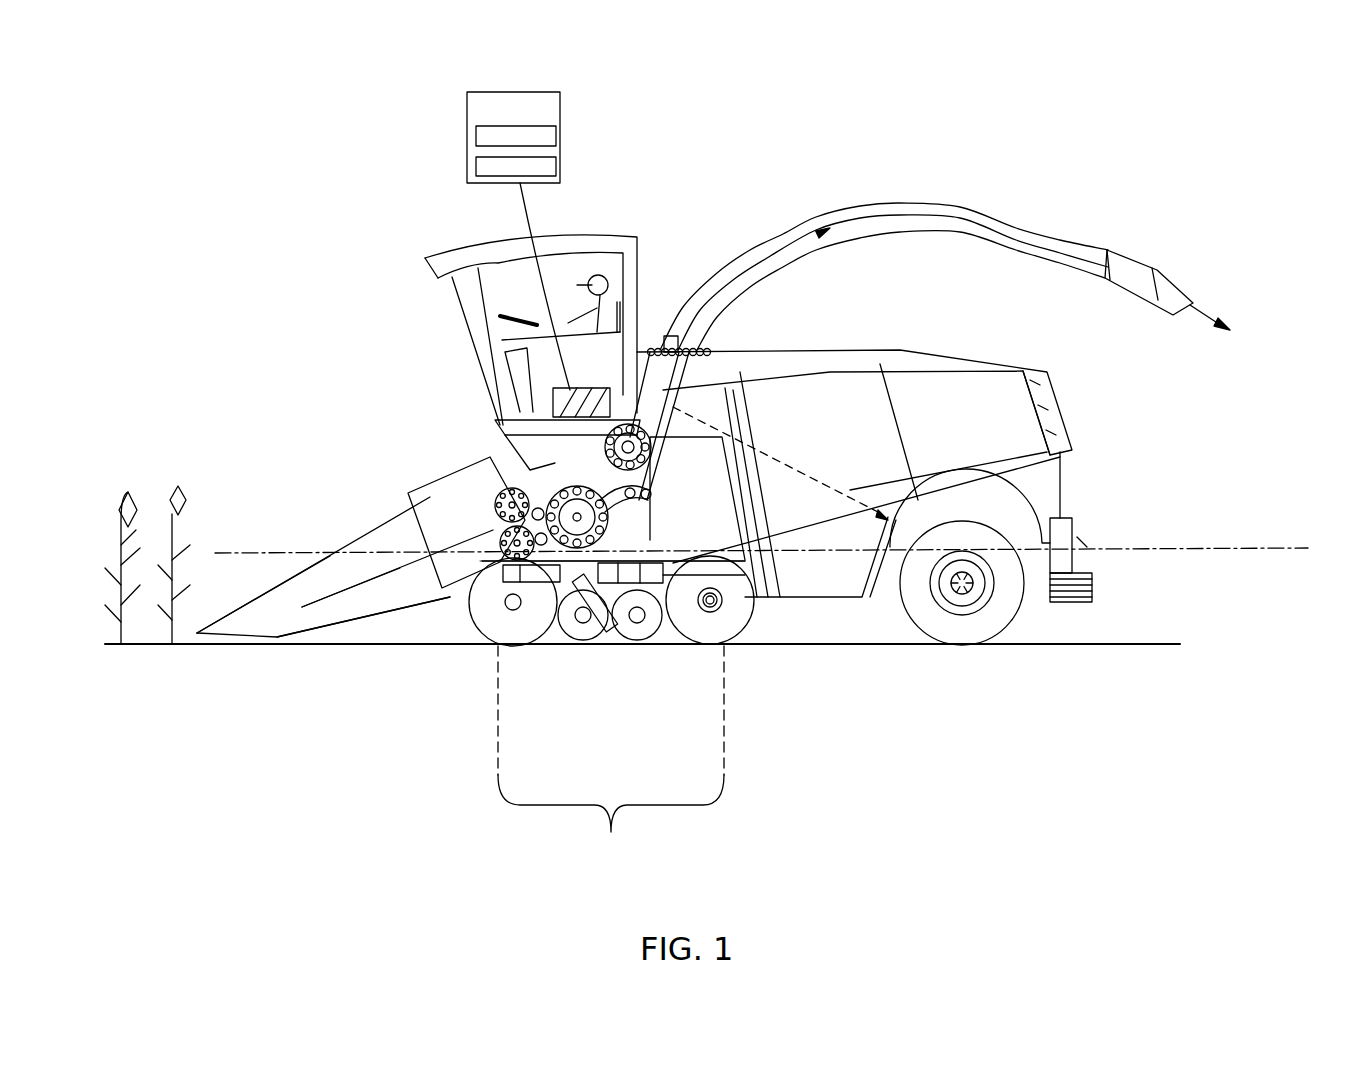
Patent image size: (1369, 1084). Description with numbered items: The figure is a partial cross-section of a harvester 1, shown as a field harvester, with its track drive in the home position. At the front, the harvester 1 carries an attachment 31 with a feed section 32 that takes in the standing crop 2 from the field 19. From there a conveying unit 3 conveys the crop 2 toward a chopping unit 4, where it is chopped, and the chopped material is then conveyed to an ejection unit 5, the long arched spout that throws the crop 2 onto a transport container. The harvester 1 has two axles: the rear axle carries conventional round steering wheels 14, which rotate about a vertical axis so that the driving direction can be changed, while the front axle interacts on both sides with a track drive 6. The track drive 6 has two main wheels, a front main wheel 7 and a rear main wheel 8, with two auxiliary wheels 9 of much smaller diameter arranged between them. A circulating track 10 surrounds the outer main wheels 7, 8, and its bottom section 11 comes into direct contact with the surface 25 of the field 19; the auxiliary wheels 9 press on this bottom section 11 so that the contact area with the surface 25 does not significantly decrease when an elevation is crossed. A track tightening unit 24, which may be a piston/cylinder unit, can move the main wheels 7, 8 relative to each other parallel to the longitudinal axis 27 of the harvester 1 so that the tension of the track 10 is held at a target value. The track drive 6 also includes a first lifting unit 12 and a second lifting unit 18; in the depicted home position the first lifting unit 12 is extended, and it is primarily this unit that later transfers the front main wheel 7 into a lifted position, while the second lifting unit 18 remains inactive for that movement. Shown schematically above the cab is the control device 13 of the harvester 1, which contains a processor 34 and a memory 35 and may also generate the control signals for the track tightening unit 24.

The harvester 1 is at (336, 270).
The crop 2 is at (128, 492).
The conveying unit 3 is at (493, 497).
The chopping unit 4 is at (543, 493).
The ejection unit 5 is at (793, 215).
The track drive 6 is at (653, 647).
The front main wheel 7 is at (513, 646).
The rear main wheel 8 is at (737, 648).
The auxiliary wheels 9 is at (587, 646).
The track 10 is at (683, 562).
The bottom section 11 is at (611, 764).
The first lifting unit 12 is at (667, 592).
The control device 13 is at (543, 92).
The steering wheels 14 is at (1005, 617).
The second lifting unit 18 is at (737, 585).
The field 19 is at (970, 793).
The track tightening unit 24 is at (490, 567).
The surface 25 is at (417, 633).
The longitudinal axis 27 is at (1238, 549).
The attachment 31 is at (262, 580).
The feed section 32 is at (335, 578).
The processor 34 is at (557, 141).
The memory 35 is at (557, 167).